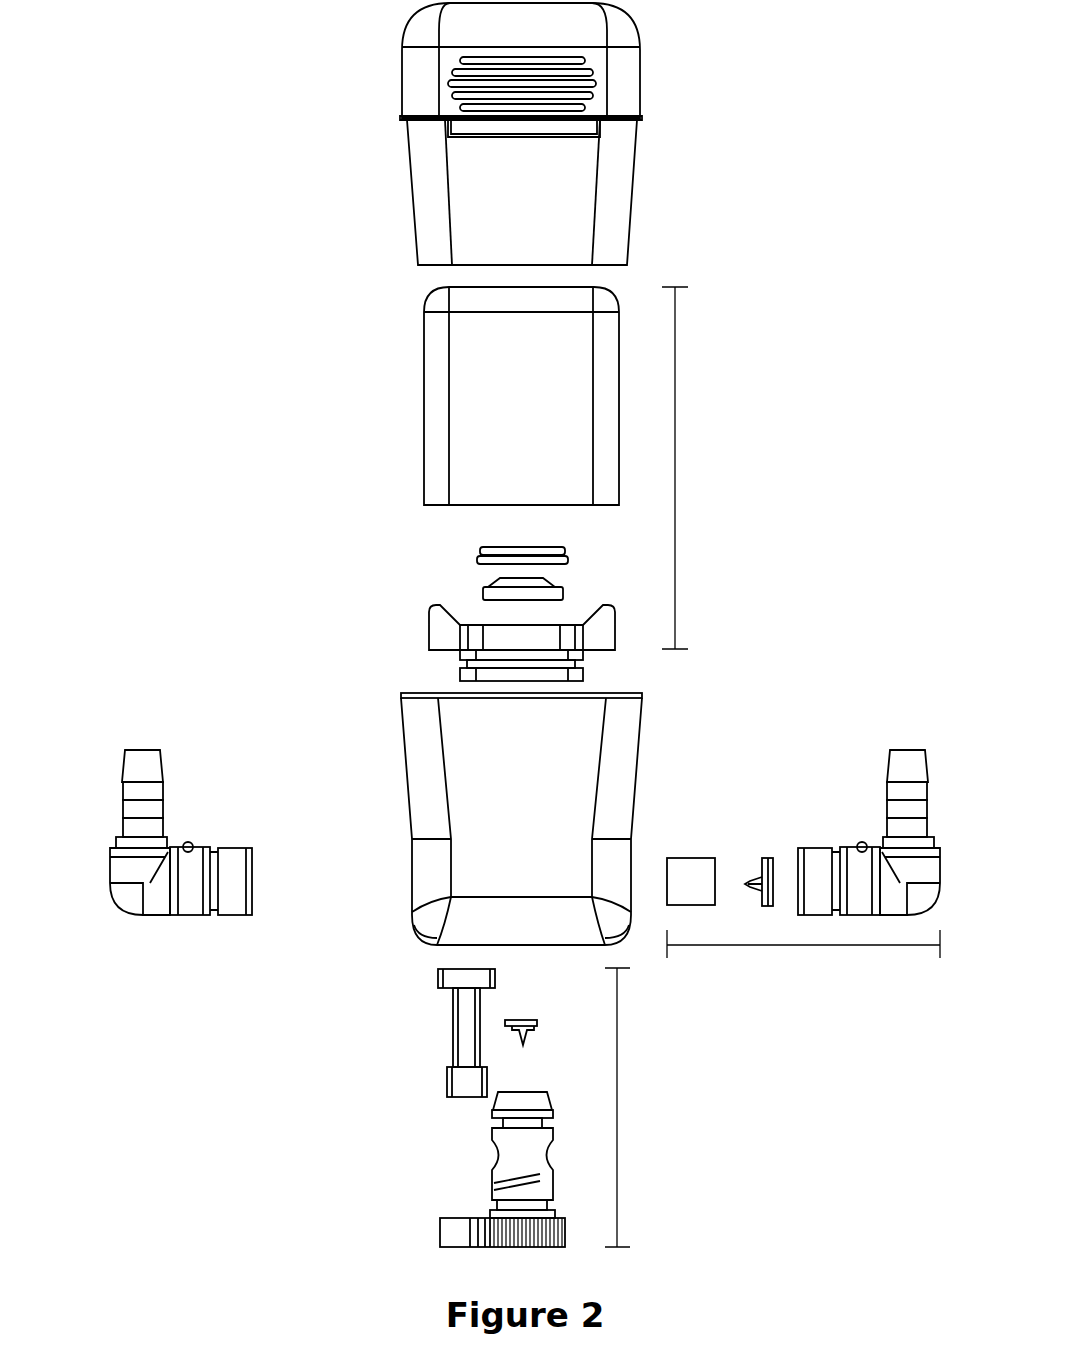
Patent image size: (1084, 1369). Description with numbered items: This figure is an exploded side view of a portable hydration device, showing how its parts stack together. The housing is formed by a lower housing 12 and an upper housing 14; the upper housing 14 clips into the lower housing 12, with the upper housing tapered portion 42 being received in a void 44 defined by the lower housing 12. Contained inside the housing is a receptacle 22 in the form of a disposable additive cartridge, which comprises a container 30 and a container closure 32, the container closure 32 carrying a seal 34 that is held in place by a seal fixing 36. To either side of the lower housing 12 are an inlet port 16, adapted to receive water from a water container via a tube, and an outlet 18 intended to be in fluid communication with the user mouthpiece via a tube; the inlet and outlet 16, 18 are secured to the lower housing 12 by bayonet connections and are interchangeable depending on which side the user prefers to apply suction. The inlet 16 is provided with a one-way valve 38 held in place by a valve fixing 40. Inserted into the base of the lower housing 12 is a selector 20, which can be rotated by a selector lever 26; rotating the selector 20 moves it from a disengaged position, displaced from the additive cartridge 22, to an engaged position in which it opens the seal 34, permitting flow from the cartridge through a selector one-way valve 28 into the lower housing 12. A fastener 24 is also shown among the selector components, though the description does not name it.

The lower housing 12 is at (473, 836).
The upper housing 14 is at (506, 134).
The inlet port 16 is at (802, 950).
The outlet 18 is at (115, 903).
The selector 20 is at (537, 1107).
The receptacle 22 is at (535, 471).
The fastener 24 is at (452, 1020).
The selector lever 26 is at (445, 1235).
The selector one-way valve 28 is at (520, 1020).
The container 30 is at (447, 400).
The container closure 32 is at (429, 625).
The seal 34 is at (496, 585).
The seal fixing 36 is at (480, 552).
The one-way valve 38 is at (770, 858).
The valve fixing 40 is at (694, 858).
The upper housing tapered portion 42 is at (413, 195).
The void 44 is at (480, 717).